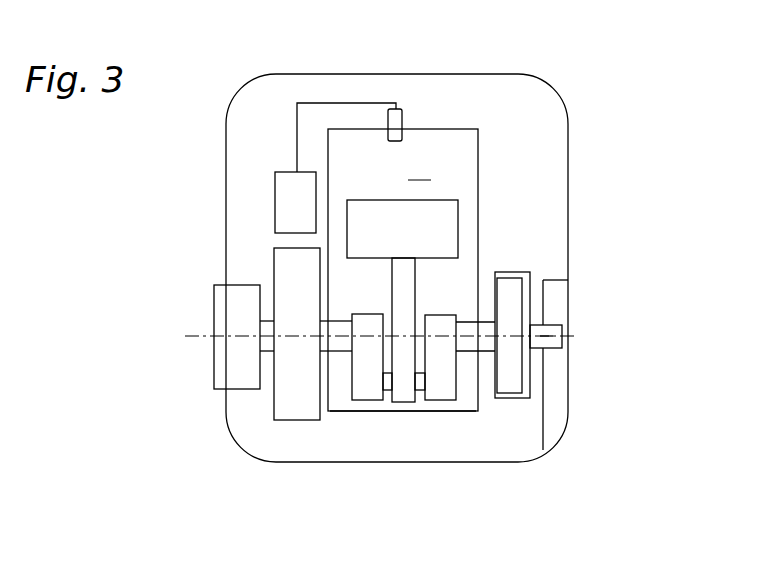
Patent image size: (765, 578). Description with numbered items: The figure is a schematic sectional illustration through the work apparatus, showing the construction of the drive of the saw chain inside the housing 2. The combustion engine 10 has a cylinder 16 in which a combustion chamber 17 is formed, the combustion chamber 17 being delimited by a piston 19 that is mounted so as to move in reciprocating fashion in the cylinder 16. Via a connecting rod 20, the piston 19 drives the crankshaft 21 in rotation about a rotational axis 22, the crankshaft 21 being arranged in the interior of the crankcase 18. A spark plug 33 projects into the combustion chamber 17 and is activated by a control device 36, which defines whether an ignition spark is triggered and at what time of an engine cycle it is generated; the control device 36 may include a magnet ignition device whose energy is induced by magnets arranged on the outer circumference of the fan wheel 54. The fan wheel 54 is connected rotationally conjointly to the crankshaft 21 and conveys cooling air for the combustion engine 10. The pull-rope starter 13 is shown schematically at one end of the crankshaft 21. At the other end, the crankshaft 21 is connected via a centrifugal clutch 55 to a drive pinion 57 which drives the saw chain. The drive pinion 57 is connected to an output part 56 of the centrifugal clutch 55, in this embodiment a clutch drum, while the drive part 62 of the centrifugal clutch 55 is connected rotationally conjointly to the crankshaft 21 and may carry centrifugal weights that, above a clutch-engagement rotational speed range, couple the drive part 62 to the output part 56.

The housing 2 is at (568, 162).
The combustion engine 10 is at (447, 126).
The pull-rope starter 13 is at (240, 319).
The cylinder 16 is at (478, 160).
The combustion chamber 17 is at (402, 208).
The crankcase 18 is at (345, 411).
The piston 19 is at (373, 218).
The connecting rod 20 is at (402, 287).
The crankshaft 21 is at (465, 343).
The rotational axis 22 is at (343, 337).
The spark plug 33 is at (395, 127).
The control device 36 is at (275, 203).
The fan wheel 54 is at (272, 395).
The centrifugal clutch 55 is at (513, 397).
The output part 56 is at (515, 272).
The drive pinion 57 is at (562, 322).
The drive part 62 is at (512, 363).